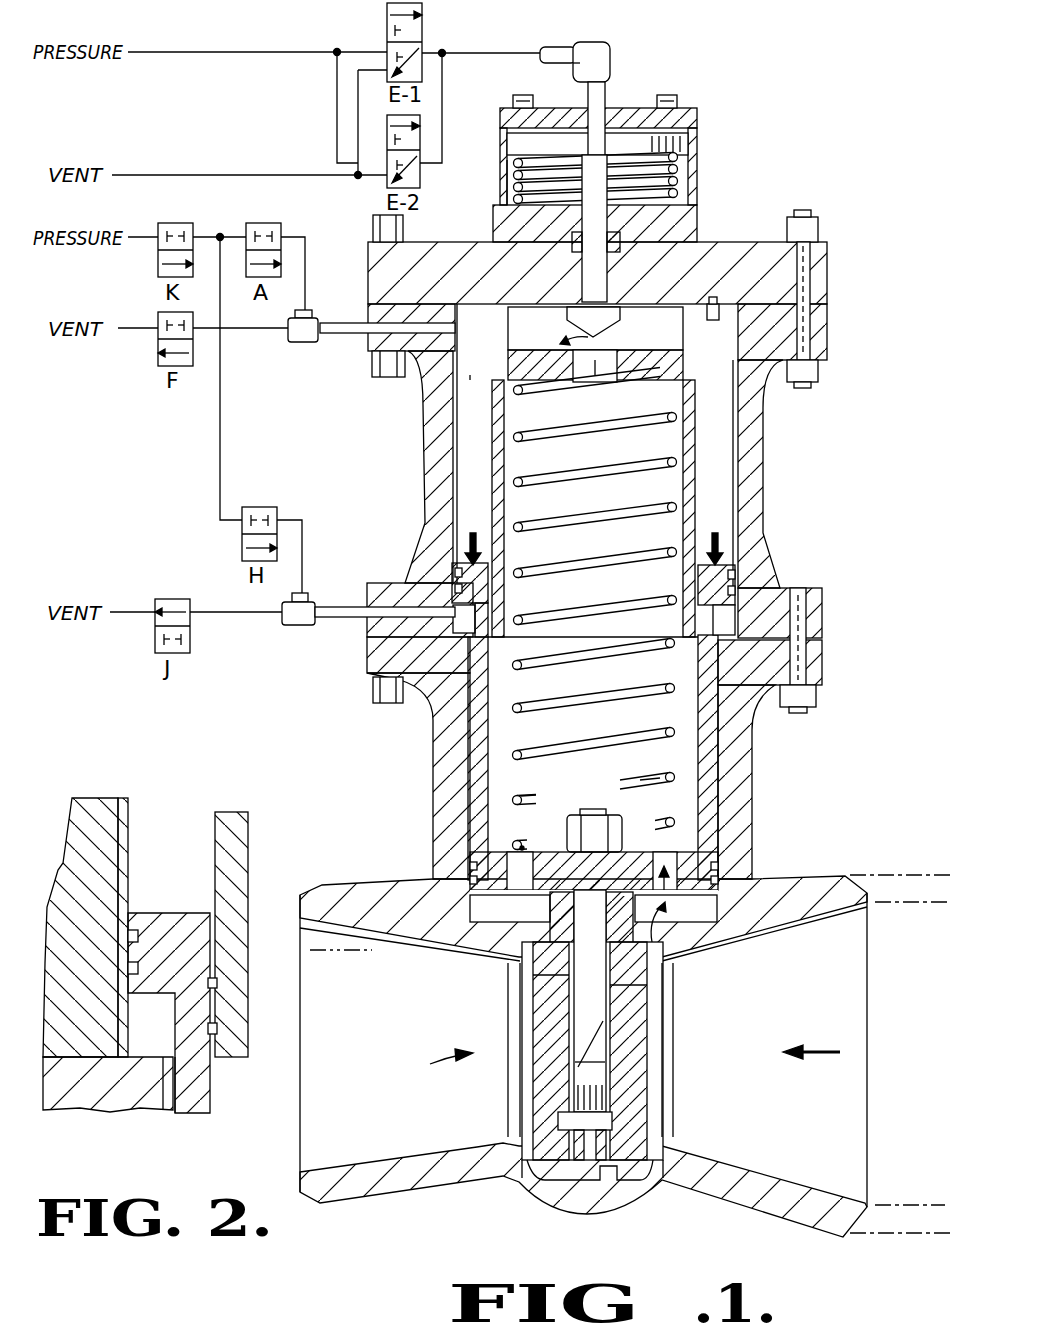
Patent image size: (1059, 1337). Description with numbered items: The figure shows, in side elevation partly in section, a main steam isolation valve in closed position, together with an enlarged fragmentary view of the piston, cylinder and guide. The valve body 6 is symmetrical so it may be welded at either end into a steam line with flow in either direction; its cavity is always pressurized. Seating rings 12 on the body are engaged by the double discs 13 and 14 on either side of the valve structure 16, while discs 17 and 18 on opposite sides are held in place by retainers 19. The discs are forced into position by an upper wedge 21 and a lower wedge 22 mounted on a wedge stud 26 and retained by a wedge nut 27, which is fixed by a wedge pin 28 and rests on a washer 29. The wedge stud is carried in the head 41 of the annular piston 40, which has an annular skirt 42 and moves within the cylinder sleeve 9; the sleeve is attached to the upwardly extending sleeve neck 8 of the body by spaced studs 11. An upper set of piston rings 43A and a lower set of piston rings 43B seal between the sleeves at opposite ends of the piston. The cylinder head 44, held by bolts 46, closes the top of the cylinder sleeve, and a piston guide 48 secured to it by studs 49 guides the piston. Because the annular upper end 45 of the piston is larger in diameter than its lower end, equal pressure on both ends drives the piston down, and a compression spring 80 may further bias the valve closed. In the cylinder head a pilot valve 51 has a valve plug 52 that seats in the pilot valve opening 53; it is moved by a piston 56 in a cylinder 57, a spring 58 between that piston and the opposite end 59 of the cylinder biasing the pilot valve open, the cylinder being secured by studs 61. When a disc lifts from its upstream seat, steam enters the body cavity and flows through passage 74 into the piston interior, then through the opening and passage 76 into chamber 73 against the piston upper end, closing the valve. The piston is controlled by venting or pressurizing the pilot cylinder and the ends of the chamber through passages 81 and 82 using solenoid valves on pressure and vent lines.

In FIG. 1, the valve body 6 is at (830, 878).
In FIG. 1, the sleeve neck 8 is at (753, 790).
In FIG. 2, the sleeve neck 8 is at (102, 1113).
In FIG. 1, the cylinder sleeve 9 is at (764, 490).
In FIG. 2, the cylinder sleeve 9 is at (97, 796).
In FIG. 1, the studs 11 is at (808, 712).
In FIG. 1, the seating rings 12 is at (522, 1168).
In FIG. 1, the disc 13 is at (541, 1108).
In FIG. 1, the disc 14 is at (641, 1085).
In FIG. 1, the valve structure 16 is at (622, 1063).
In FIG. 1, the disc 17 is at (546, 976).
In FIG. 1, the disc 18 is at (621, 985).
In FIG. 1, the retainers 19 is at (548, 913).
In FIG. 1, the upper wedge 21 is at (575, 1017).
In FIG. 1, the lower wedge 22 is at (576, 1085).
In FIG. 1, the wedge stud 26 is at (565, 865).
In FIG. 1, the wedge nut 27 is at (538, 796).
In FIG. 1, the wedge pin 28 is at (592, 828).
In FIG. 1, the washer 29 is at (628, 830).
In FIG. 1, the annular piston 40 is at (717, 828).
In FIG. 2, the annular piston 40 is at (203, 1113).
In FIG. 1, the head 41 is at (735, 932).
In FIG. 1, the annular skirt 42 is at (746, 606).
In FIG. 1, the upper set of piston rings 43A is at (736, 590).
In FIG. 2, the upper set of piston rings 43A is at (132, 978).
In FIG. 1, the lower set of piston rings 43B is at (722, 866).
In FIG. 1, the cylinder head 44 is at (828, 294).
In FIG. 1, the annular upper end 45 is at (452, 580).
In FIG. 2, the annular upper end 45 is at (165, 913).
In FIG. 1, the bolts 46 is at (806, 283).
In FIG. 1, the piston guide 48 is at (694, 452).
In FIG. 2, the piston guide 48 is at (226, 812).
In FIG. 1, the studs 49 is at (721, 340).
In FIG. 1, the pilot valve 51 is at (603, 196).
In FIG. 1, the valve plug 52 is at (570, 321).
In FIG. 1, the pilot valve opening 53 is at (611, 329).
In FIG. 1, the piston 56 is at (506, 146).
In FIG. 1, the cylinder 57 is at (501, 176).
In FIG. 1, the spring 58 is at (672, 178).
In FIG. 1, the opposite end 59 is at (698, 220).
In FIG. 1, the studs 61 is at (676, 99).
In FIG. 1, the chamber 73 is at (494, 404).
In FIG. 1, the passage 74 is at (672, 872).
In FIG. 1, the passage 76 is at (494, 327).
In FIG. 1, the compression spring 80 is at (545, 715).
In FIG. 1, the passage 81 is at (372, 333).
In FIG. 1, the passage 82 is at (366, 627).